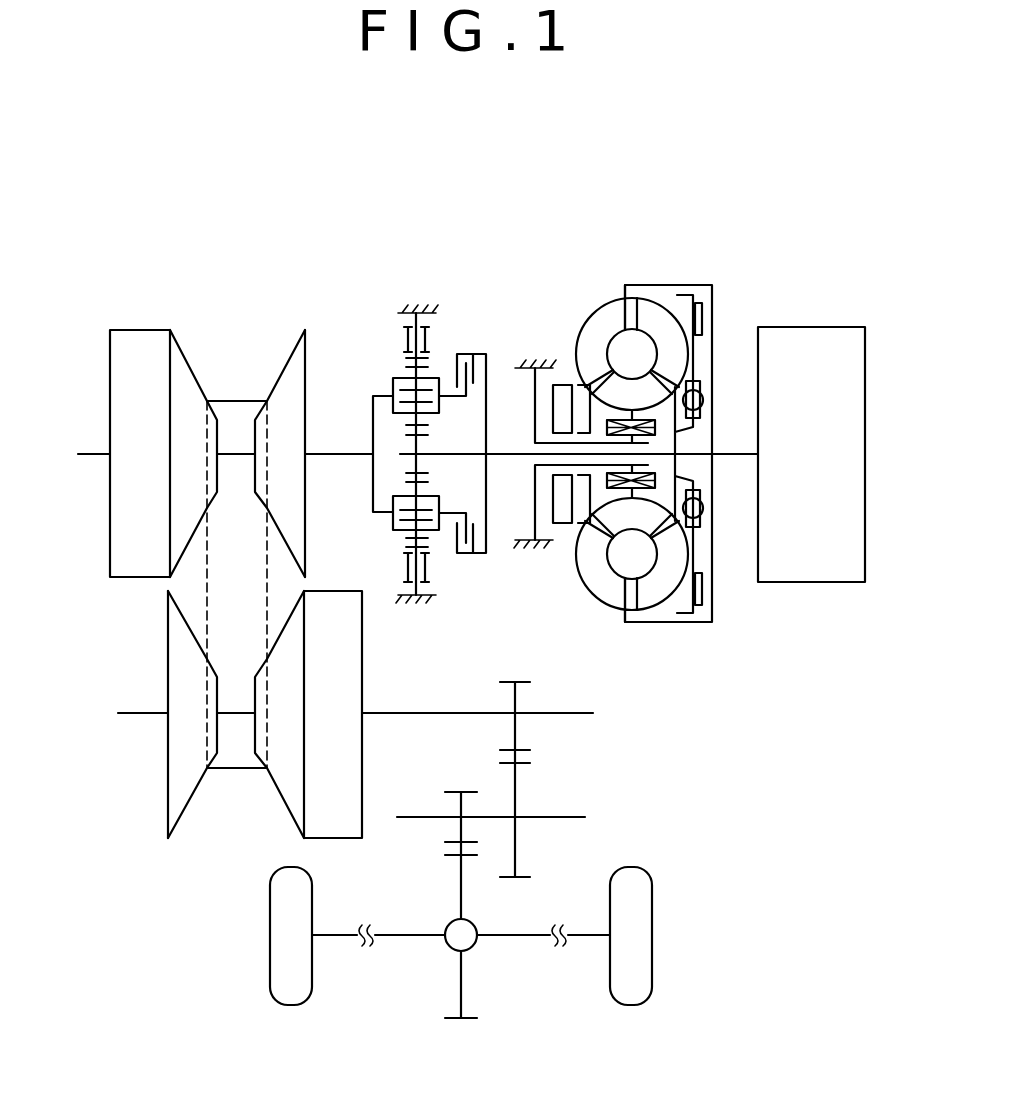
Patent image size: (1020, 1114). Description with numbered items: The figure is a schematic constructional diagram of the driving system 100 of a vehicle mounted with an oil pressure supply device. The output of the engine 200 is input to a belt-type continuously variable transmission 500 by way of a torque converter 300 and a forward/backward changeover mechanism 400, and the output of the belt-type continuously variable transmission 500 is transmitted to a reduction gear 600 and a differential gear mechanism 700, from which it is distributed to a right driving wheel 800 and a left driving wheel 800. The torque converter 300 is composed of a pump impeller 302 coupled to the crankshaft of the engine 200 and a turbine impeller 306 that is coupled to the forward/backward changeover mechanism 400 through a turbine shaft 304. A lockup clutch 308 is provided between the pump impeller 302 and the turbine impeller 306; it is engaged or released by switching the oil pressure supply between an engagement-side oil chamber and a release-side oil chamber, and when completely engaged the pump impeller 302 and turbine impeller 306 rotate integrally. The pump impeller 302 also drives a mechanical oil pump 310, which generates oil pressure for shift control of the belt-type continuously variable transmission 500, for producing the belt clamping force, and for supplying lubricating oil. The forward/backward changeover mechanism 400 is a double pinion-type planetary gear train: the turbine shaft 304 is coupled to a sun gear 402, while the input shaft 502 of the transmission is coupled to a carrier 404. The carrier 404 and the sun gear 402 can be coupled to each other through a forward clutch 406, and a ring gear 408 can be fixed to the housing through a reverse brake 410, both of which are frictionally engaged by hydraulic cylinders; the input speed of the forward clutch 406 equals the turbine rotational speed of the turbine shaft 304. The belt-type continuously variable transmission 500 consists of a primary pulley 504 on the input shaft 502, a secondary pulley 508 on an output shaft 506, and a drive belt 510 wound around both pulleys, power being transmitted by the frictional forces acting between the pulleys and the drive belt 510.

The driving system 100 is at (825, 263).
The engine 200 is at (843, 403).
The torque converter 300 is at (646, 435).
The pump impeller 302 is at (598, 585).
The turbine shaft 304 is at (503, 457).
The turbine impeller 306 is at (652, 595).
The lockup clutch 308 is at (700, 317).
The mechanical oil pump 310 is at (562, 388).
The forward/backward changeover mechanism 400 is at (419, 417).
The sun gear 402 is at (410, 468).
The carrier 404 is at (392, 377).
The forward clutch 406 is at (473, 340).
The ring gear 408 is at (408, 553).
The reverse brake 410 is at (436, 333).
The belt-type continuously variable transmission 500 is at (315, 605).
The input shaft 502 is at (335, 450).
The primary pulley 504 is at (110, 358).
The output shaft 506 is at (420, 715).
The secondary pulley 508 is at (352, 677).
The drive belt 510 is at (235, 398).
The reduction gear 600 is at (575, 780).
The differential gear mechanism 700 is at (457, 937).
The driving wheel 800 is at (290, 955).